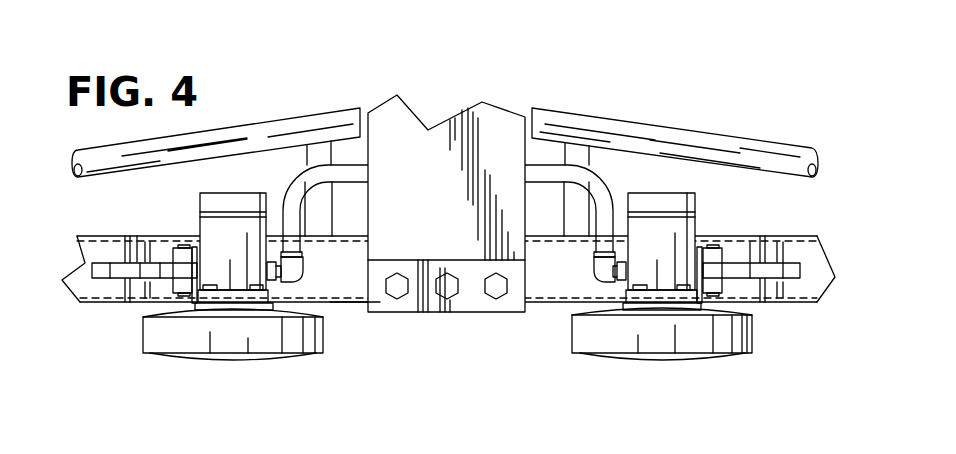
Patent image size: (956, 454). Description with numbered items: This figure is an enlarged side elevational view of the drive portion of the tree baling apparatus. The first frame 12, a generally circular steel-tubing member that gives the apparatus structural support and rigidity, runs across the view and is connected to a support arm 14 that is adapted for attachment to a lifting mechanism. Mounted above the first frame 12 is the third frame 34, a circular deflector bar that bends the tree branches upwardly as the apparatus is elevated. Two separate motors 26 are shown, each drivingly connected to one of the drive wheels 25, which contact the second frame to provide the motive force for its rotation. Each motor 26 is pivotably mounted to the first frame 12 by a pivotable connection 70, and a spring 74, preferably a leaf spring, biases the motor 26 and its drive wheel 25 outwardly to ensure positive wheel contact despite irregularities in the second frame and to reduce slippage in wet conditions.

The first frame 12 is at (343, 295).
The support arm 14 is at (404, 106).
The drive wheels 25 is at (233, 360).
The motor 26 is at (232, 193).
The third frame 34 is at (571, 118).
The pivotable connection 70 is at (130, 229).
The spring 74 is at (135, 270).